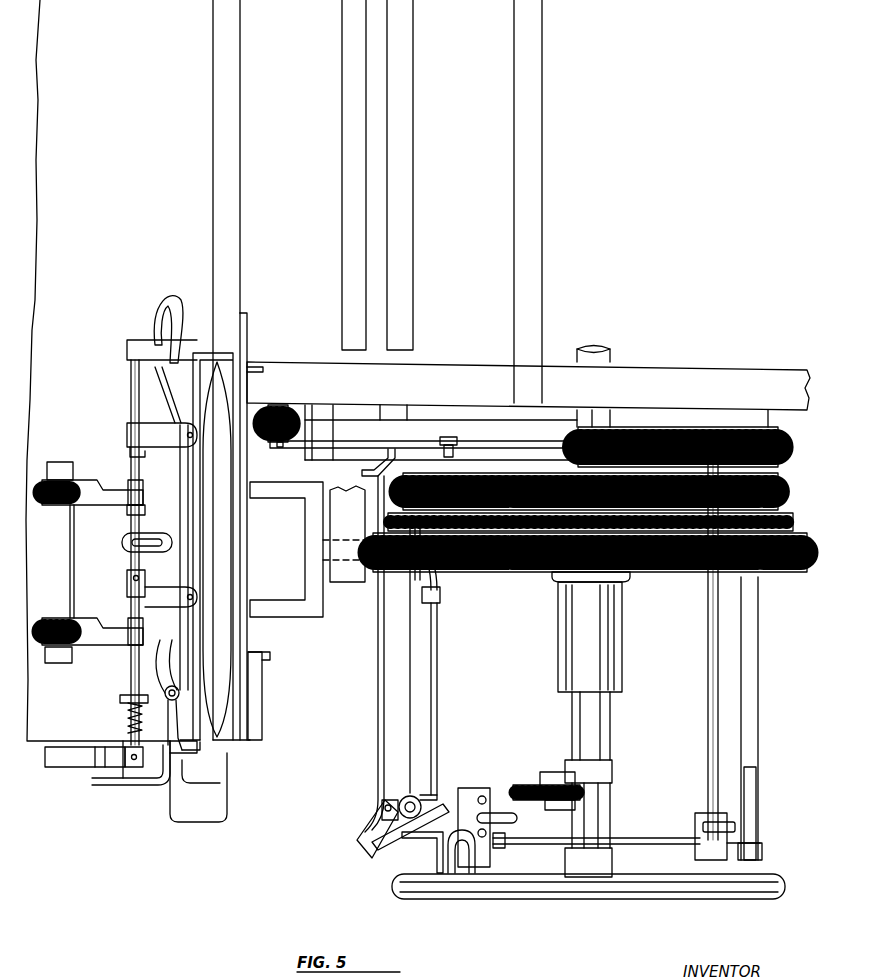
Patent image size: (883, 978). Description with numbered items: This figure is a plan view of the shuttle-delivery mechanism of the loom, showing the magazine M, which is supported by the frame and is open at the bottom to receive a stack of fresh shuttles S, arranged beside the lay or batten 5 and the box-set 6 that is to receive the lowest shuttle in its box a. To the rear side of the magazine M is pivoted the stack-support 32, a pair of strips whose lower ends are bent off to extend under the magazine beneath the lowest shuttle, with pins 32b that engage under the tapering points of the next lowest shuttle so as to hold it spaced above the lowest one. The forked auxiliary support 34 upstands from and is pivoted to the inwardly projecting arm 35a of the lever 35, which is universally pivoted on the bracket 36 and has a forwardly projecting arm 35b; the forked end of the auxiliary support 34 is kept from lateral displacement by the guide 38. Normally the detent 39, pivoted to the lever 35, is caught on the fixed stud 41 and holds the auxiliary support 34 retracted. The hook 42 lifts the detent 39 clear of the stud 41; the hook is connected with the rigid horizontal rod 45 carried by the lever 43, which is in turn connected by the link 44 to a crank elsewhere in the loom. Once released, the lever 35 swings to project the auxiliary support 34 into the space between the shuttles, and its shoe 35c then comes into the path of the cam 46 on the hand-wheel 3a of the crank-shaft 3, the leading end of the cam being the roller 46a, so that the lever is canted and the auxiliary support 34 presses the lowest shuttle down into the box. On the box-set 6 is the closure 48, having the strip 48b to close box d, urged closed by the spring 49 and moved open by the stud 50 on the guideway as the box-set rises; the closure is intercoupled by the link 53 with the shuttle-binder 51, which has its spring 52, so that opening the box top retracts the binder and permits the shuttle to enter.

The crank-shaft 3 is at (604, 741).
The hand-wheel 3a is at (598, 899).
The lay or batten 5 is at (236, 292).
The box-set 6 is at (140, 787).
The stack-support 32 is at (252, 449).
The pins or projections 32b is at (250, 742).
The auxiliary support 34 is at (302, 618).
The lever 35 is at (425, 797).
The inwardly projecting arm 35a is at (438, 723).
The forwardly projecting arm 35b is at (368, 822).
The shoe 35c is at (490, 862).
The bracket 36 is at (379, 772).
The guide 38 is at (345, 581).
The detent 39 is at (656, 846).
The fixed stud 41 is at (747, 834).
The hook 42 is at (729, 826).
The lever 43 is at (549, 441).
The link 44 is at (418, 441).
The horizontal rod 45 is at (708, 738).
The cam 46 is at (421, 852).
The roller 46a is at (463, 880).
The gate or closure 48 is at (93, 647).
The strip 48b is at (70, 578).
The spring 49 is at (127, 724).
The stud 50 is at (96, 772).
The shuttle-binder 51 is at (172, 476).
The spring 52 is at (158, 621).
The link 53 is at (156, 531).
The magazine M is at (228, 742).
The shuttle S is at (213, 546).